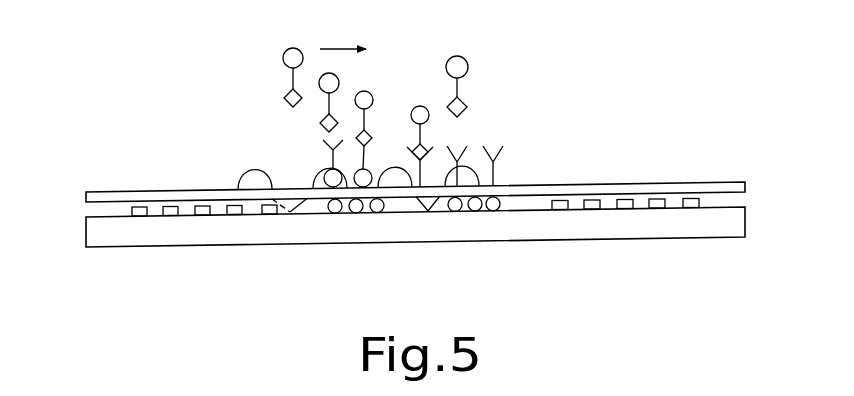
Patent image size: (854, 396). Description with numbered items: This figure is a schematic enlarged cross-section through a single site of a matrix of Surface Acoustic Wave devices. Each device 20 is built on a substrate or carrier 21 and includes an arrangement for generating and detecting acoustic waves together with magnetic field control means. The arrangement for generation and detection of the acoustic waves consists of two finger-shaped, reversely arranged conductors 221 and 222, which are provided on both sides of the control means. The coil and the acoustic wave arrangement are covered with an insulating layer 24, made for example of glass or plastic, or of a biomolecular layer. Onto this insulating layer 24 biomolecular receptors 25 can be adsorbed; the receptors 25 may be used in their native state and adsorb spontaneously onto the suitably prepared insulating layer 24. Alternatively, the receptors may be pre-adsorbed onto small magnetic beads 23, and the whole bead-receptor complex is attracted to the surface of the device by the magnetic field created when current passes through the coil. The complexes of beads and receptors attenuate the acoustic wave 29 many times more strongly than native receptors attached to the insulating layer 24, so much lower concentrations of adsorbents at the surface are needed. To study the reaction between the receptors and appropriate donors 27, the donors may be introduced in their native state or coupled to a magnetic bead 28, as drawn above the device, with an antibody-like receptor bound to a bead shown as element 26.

The SAW device 20 is at (584, 73).
The substrate 21 is at (86, 230).
The magnetic beads 23 is at (388, 213).
The insulating layer 24 is at (113, 191).
The receptors 25 is at (512, 167).
The antibody bound to bead 26 is at (322, 155).
The donors 27 is at (467, 108).
The magnetic bead 28 is at (461, 62).
The acoustic wave 29 is at (248, 160).
The first finger-shaped conductor 221 is at (233, 216).
The second finger-shaped conductor 222 is at (270, 215).